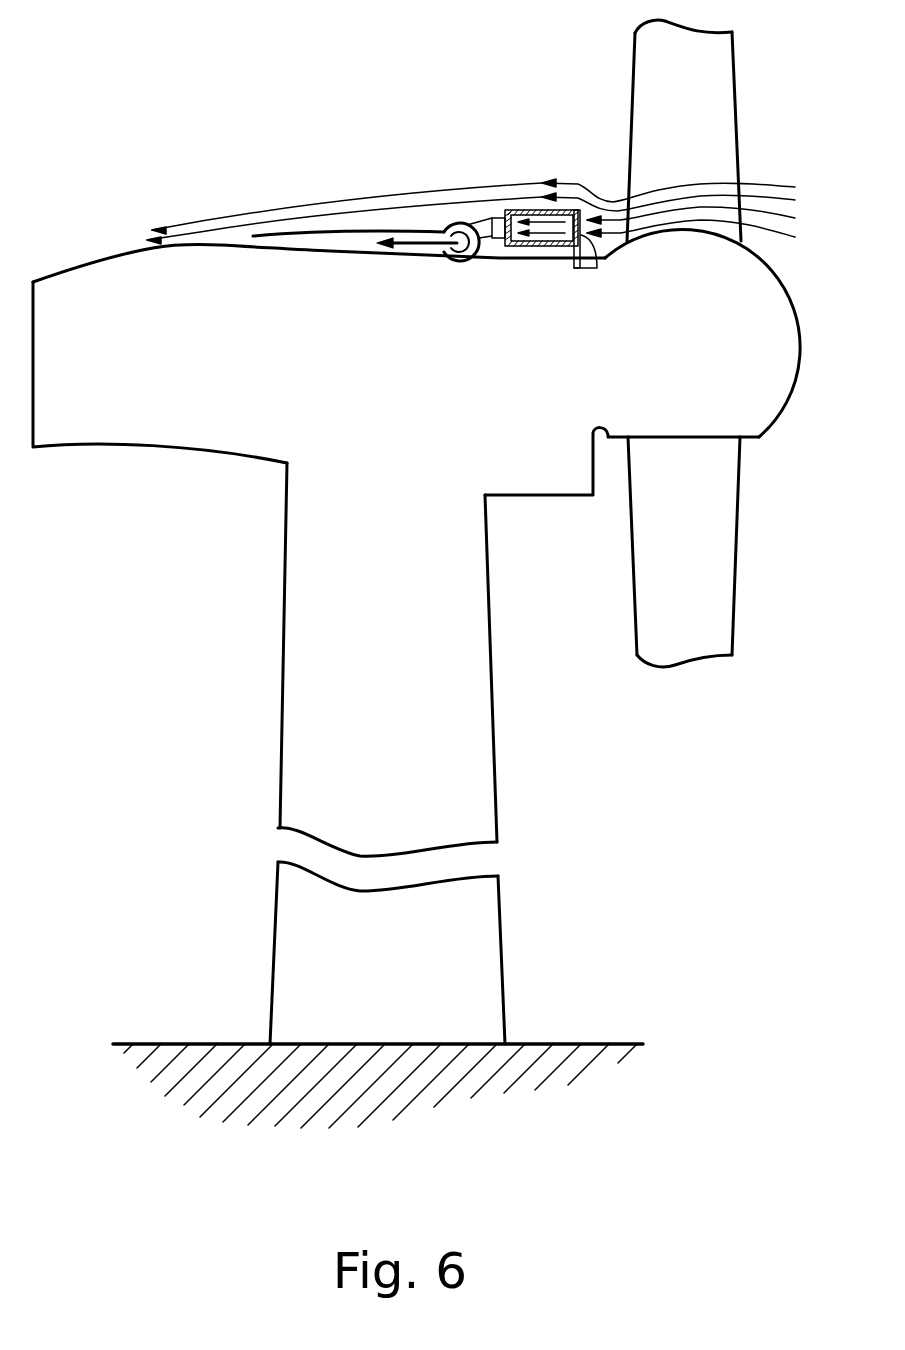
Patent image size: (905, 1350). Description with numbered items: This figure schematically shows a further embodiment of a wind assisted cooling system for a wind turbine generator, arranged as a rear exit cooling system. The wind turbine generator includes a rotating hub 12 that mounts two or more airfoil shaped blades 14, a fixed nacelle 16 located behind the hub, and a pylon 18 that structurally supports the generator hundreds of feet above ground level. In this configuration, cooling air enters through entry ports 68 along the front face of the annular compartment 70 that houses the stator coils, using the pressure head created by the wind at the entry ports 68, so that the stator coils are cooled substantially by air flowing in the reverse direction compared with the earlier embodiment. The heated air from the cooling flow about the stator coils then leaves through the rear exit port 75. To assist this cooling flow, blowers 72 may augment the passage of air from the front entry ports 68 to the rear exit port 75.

The rotating hub 12 is at (788, 346).
The airfoil shaped blades 14 is at (722, 582).
The fixed nacelle 16 is at (100, 425).
The pylon 18 is at (300, 661).
The entry ports 68 is at (597, 266).
The annular compartment 70 is at (530, 248).
The blowers 72 is at (457, 262).
The rear exit port 75 is at (248, 243).